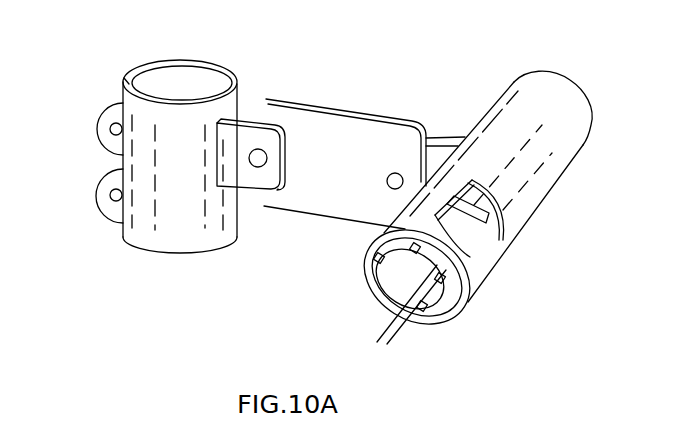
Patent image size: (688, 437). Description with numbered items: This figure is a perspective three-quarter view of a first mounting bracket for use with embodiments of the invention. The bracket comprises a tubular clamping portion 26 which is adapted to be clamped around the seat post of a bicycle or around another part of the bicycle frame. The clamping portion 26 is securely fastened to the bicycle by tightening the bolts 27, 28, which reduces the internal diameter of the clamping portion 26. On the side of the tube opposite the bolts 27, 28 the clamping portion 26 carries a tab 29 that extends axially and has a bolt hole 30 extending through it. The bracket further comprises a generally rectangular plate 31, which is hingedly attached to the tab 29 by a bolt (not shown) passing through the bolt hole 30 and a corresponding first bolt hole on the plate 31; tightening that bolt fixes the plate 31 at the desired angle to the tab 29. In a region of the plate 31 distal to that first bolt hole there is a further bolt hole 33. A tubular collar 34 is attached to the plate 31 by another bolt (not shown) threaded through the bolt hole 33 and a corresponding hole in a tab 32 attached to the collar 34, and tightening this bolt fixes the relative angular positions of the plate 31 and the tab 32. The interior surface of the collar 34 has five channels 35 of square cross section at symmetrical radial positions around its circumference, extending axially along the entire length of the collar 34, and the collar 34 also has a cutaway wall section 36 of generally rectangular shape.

The tubular clamping portion 26 is at (178, 232).
The bolt 27 is at (110, 195).
The bolt 28 is at (110, 129).
The tab 29 is at (248, 137).
The bolt hole 30 is at (258, 167).
The generally rectangular plate 31 is at (348, 148).
The tab 32 is at (437, 145).
The further bolt hole 33 is at (388, 186).
The tubular collar 34 is at (543, 157).
The channels 35 is at (458, 213).
The cutaway wall section 36 is at (472, 214).